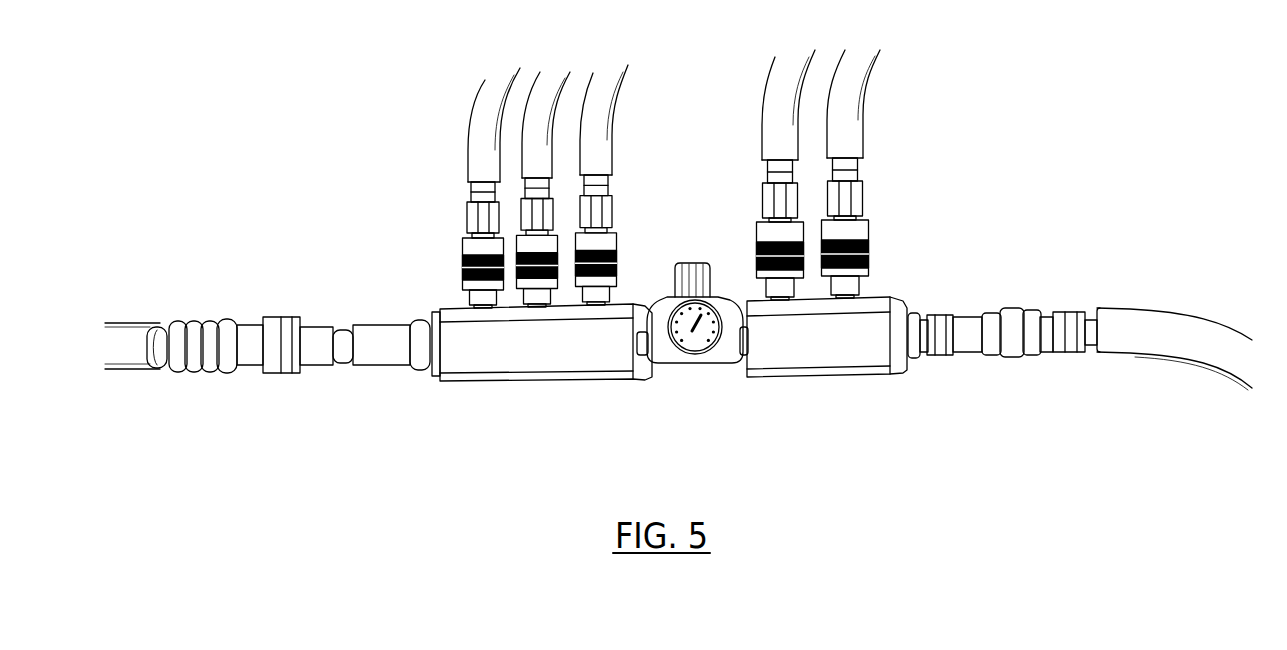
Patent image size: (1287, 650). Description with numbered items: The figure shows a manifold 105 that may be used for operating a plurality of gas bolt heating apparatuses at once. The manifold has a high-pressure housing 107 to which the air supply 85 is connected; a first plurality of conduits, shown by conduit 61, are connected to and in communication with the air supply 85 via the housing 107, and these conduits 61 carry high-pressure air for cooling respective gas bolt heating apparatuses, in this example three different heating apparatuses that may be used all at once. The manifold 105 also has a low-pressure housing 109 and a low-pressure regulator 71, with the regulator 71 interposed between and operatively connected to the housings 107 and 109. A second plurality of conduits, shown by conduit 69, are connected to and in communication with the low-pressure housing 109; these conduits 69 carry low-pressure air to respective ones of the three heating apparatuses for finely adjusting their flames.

The manifold 105 is at (394, 217).
The conduit 61 is at (482, 122).
The conduit 69 is at (782, 88).
The air supply 85 is at (133, 348).
The high-pressure housing 107 is at (520, 362).
The low-pressure regulator 71 is at (697, 309).
The low-pressure housing 109 is at (825, 357).